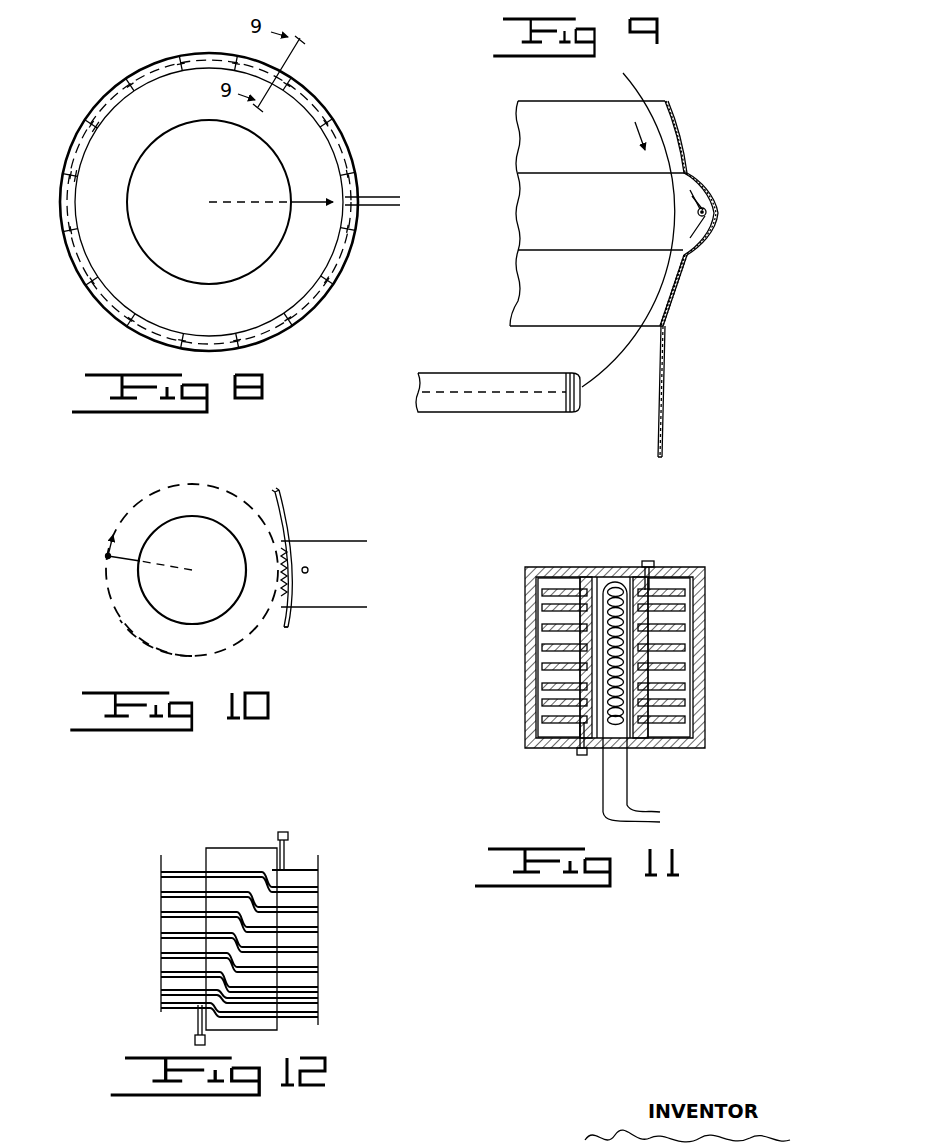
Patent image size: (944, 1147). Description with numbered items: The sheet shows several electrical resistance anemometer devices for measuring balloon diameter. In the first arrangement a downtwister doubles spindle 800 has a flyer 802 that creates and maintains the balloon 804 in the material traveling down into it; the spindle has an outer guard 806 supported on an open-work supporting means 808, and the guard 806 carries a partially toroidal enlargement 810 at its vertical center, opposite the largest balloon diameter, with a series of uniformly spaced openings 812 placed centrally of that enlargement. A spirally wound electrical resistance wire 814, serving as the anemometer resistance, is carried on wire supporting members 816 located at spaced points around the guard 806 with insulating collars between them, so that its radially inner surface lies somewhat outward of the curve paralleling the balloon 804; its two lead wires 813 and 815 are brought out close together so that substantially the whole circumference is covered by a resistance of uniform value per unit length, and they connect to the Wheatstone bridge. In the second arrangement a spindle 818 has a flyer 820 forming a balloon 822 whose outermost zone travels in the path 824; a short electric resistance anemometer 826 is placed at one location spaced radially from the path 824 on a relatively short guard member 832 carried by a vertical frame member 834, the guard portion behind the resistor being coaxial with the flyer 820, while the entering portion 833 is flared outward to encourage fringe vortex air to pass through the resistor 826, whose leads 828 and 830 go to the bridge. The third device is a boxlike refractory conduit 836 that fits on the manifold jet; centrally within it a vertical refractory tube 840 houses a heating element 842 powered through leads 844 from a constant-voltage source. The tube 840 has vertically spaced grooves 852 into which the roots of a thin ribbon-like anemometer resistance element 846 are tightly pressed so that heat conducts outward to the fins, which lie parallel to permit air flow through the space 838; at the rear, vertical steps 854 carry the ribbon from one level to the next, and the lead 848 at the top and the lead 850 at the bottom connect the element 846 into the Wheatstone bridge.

In FIG. 8, the spindle 800 is at (143, 62).
In FIG. 9, the spindle 800 is at (685, 109).
In FIG. 8, the flyer 802 is at (223, 265).
In FIG. 9, the flyer 802 is at (465, 402).
In FIG. 8, the balloon 804 is at (326, 225).
In FIG. 9, the balloon 804 is at (660, 147).
In FIG. 8, the outer guard 806 is at (105, 279).
In FIG. 9, the outer guard 806 is at (682, 300).
In FIG. 9, the open-work supporting means 808 is at (663, 396).
In FIG. 8, the partially toroidal enlargement 810 is at (335, 276).
In FIG. 9, the partially toroidal enlargement 810 is at (703, 176).
In FIG. 9, the openings 812 is at (714, 213).
In FIG. 8, the lead wire 813 is at (390, 197).
In FIG. 8, the spirally wound electrical resistance wire 814 is at (190, 64).
In FIG. 9, the spirally wound electrical resistance wire 814 is at (700, 212).
In FIG. 8, the lead wire 815 is at (392, 206).
In FIG. 8, the wire supporting members 816 is at (78, 147).
In FIG. 9, the wire supporting members 816 is at (700, 205).
In FIG. 10, the spindle 818 is at (243, 483).
In FIG. 10, the flyer 820 is at (183, 525).
In FIG. 10, the balloon 822 is at (110, 560).
In FIG. 10, the path 824 is at (246, 636).
In FIG. 10, the electric resistance anemometer 826 is at (300, 540).
In FIG. 10, the lead 828 is at (367, 541).
In FIG. 10, the lead 830 is at (367, 607).
In FIG. 10, the guard member 832 is at (298, 553).
In FIG. 10, the entering portion 833 is at (287, 507).
In FIG. 10, the vertical frame member 834 is at (290, 605).
In FIG. 11, the boxlike conduit 836 is at (677, 566).
In FIG. 11, the space 838 is at (560, 583).
In FIG. 11, the vertical refractory tube 840 is at (640, 738).
In FIG. 12, the vertical refractory tube 840 is at (228, 880).
In FIG. 11, the heating element 842 is at (612, 730).
In FIG. 11, the leads 844 is at (649, 706).
In FIG. 11, the ribbon-like electrical anemometer resistance element 846 is at (690, 611).
In FIG. 12, the ribbon-like electrical anemometer resistance element 846 is at (318, 862).
In FIG. 11, the lead 848 is at (646, 560).
In FIG. 12, the lead 848 is at (289, 836).
In FIG. 11, the lead 850 is at (576, 752).
In FIG. 12, the lead 850 is at (195, 1040).
In FIG. 12, the grooves 852 is at (215, 855).
In FIG. 12, the vertical steps 854 is at (262, 906).